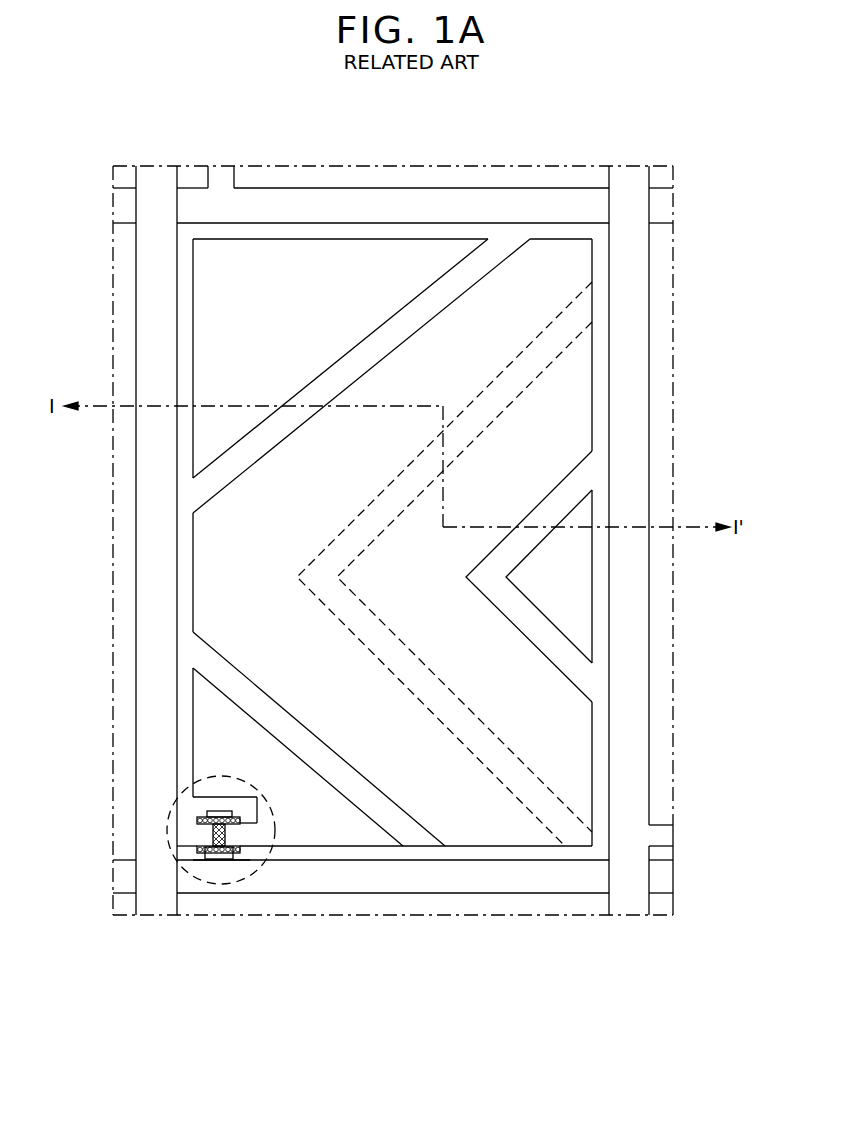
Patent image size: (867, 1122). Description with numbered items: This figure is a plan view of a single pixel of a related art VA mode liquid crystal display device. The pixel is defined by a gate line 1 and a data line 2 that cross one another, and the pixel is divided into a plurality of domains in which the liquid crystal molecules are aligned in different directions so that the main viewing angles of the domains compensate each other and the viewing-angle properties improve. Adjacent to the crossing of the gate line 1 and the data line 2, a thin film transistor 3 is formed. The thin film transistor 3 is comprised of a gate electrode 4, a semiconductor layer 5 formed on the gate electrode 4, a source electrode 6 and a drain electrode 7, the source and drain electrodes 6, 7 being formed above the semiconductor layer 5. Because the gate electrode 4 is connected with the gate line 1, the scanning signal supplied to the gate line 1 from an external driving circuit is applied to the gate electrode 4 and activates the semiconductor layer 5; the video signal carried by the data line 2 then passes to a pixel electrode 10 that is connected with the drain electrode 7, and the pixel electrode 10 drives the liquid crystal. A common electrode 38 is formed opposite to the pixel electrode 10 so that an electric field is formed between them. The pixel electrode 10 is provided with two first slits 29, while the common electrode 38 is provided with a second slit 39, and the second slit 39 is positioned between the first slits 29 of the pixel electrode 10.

The gate line 1 is at (658, 878).
The data line 2 is at (635, 818).
The thin film transistor 3 is at (220, 882).
The gate electrode 4 is at (215, 852).
The semiconductor layer 5 is at (197, 820).
The source electrode 6 is at (197, 838).
The drain electrode 7 is at (240, 835).
The pixel electrode 10 is at (403, 239).
The first slits 29 is at (478, 286).
The common electrode 38 is at (602, 268).
The second slit 39 is at (568, 349).